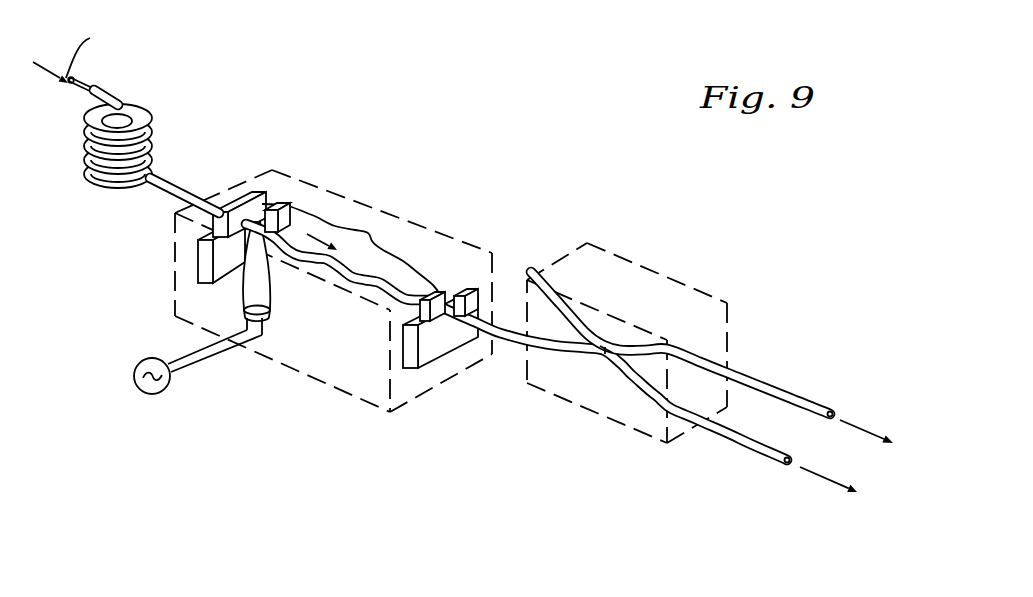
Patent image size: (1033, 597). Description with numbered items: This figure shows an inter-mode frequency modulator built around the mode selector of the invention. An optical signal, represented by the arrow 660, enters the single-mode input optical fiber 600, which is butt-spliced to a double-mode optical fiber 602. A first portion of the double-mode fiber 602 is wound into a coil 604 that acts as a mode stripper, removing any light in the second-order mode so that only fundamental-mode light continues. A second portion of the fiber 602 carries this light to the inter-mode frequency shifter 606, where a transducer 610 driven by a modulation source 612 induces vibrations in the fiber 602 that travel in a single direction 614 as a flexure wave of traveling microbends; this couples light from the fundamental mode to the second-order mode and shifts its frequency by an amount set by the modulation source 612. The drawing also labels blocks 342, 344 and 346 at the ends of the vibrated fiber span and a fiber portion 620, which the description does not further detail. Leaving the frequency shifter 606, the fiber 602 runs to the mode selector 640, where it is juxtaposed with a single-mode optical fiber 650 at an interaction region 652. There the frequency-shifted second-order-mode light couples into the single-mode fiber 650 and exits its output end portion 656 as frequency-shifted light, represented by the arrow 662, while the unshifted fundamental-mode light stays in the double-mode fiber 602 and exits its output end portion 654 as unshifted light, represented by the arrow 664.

The arrow representing optical signal 660 is at (54, 67).
The input optical fiber 600 is at (86, 90).
The double-mode optical fiber 602 is at (112, 99).
The coil (mode stripper) 604 is at (113, 176).
The inter-mode frequency shifter 606 is at (298, 368).
The second clamp block 342 is at (198, 262).
The transducer 610 is at (266, 294).
The modulation source 612 is at (152, 394).
The direction of propagation 614 is at (307, 234).
The second optical fiber loop 620 is at (365, 229).
The third clamp block 344 is at (433, 291).
The fourth clamp block 346 is at (427, 362).
The mode selector 640 is at (583, 409).
The single mode optical fiber 650 is at (693, 347).
The interaction region 652 is at (604, 355).
The output end portion of double-mode optical fiber 654 is at (787, 456).
The output end portion of single mode optical fiber 656 is at (830, 418).
The arrow representing frequency shifted light 662 is at (866, 427).
The arrow representing unshifted light 664 is at (851, 484).